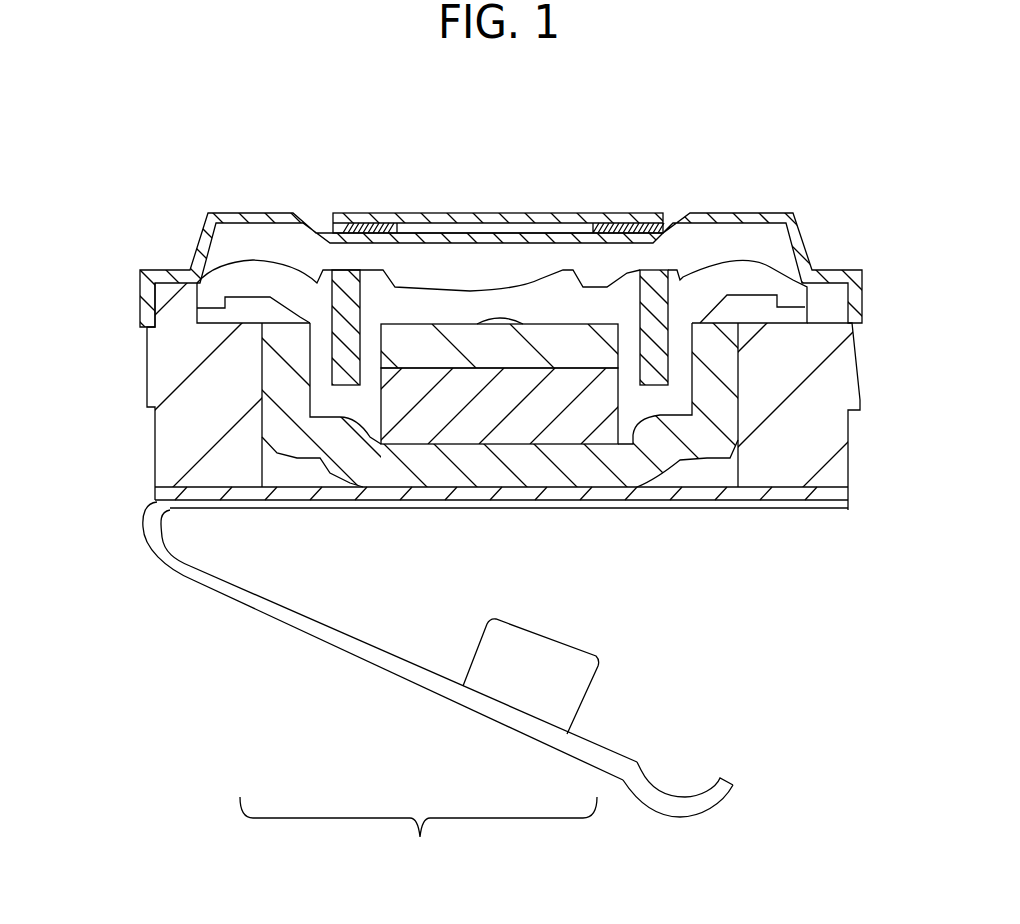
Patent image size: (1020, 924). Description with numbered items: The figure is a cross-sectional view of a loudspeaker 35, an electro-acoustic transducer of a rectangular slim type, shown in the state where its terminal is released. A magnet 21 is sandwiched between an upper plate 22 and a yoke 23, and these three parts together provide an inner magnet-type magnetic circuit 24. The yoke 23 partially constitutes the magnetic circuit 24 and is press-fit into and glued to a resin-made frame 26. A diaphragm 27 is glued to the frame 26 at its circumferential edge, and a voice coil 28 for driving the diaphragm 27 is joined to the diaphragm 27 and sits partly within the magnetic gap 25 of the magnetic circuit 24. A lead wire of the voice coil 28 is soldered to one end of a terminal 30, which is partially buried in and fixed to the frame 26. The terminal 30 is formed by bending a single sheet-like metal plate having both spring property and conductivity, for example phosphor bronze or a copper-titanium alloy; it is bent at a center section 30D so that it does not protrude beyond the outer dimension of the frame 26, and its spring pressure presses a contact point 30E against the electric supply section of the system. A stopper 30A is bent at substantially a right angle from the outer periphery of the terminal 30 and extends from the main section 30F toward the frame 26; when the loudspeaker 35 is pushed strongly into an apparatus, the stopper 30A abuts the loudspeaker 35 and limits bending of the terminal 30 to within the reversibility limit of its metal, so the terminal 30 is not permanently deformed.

The magnet 21 is at (460, 432).
The upper plate 22 is at (515, 353).
The yoke 23 is at (346, 478).
The magnetic circuit 24 is at (418, 839).
The magnetic gap 25 is at (678, 360).
The frame 26 is at (821, 320).
The diaphragm 27 is at (497, 290).
The voice coil 28 is at (346, 288).
The terminal 30 is at (188, 592).
The stopper 30A is at (563, 663).
The center section 30D is at (143, 540).
The contact point 30E is at (693, 807).
The main section 30F is at (237, 597).
The loudspeaker 35 is at (834, 528).